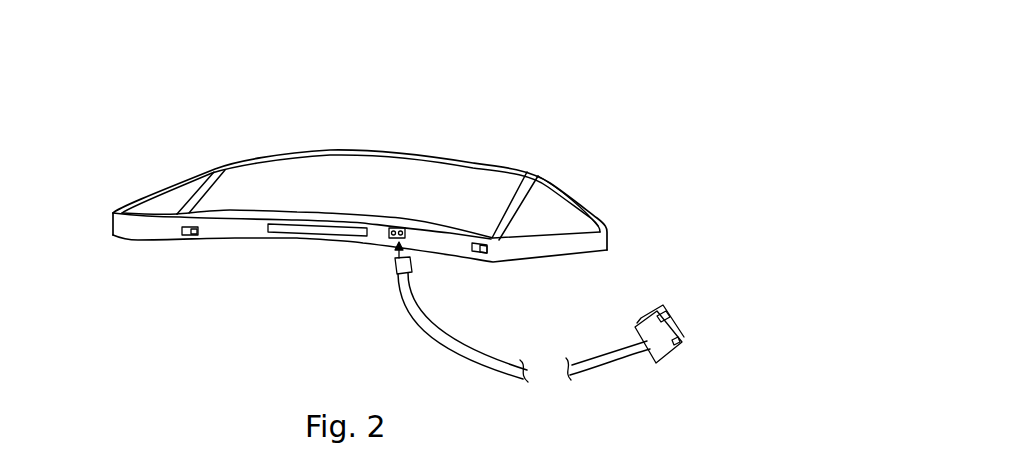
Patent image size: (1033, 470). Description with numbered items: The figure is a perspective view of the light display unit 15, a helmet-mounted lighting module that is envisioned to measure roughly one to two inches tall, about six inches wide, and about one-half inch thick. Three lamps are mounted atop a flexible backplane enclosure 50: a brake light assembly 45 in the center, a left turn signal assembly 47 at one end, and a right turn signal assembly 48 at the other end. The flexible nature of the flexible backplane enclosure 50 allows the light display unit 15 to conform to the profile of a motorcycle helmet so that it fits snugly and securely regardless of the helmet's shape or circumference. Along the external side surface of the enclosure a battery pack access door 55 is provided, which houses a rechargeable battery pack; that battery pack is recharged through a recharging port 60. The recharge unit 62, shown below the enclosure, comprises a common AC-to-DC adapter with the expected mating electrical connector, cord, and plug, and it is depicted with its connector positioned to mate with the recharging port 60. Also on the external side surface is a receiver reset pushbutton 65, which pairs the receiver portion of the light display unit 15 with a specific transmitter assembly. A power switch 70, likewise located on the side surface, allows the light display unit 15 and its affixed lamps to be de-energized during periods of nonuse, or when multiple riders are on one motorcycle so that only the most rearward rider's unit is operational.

The light display unit 15 is at (650, 98).
The brake light assembly 45 is at (283, 185).
The left turn signal assembly 47 is at (163, 202).
The right turn signal assembly 48 is at (542, 193).
The flexible backplane enclosure 50 is at (138, 228).
The battery pack access door 55 is at (318, 229).
The recharging port 60 is at (393, 228).
The recharge unit 62 is at (520, 364).
The receiver reset pushbutton 65 is at (192, 236).
The power switch 70 is at (485, 253).